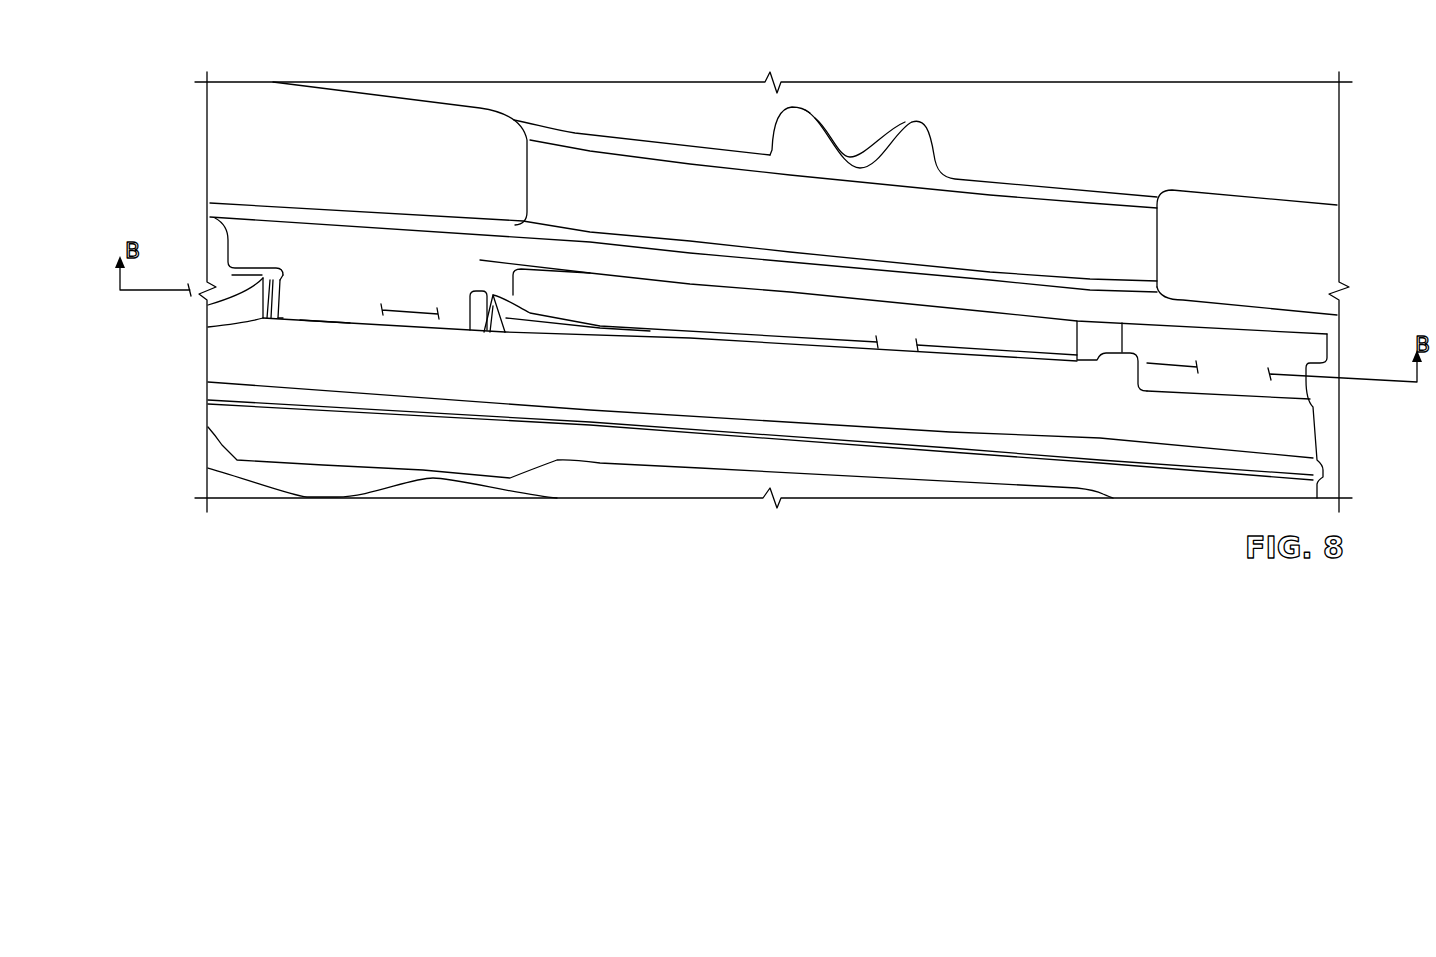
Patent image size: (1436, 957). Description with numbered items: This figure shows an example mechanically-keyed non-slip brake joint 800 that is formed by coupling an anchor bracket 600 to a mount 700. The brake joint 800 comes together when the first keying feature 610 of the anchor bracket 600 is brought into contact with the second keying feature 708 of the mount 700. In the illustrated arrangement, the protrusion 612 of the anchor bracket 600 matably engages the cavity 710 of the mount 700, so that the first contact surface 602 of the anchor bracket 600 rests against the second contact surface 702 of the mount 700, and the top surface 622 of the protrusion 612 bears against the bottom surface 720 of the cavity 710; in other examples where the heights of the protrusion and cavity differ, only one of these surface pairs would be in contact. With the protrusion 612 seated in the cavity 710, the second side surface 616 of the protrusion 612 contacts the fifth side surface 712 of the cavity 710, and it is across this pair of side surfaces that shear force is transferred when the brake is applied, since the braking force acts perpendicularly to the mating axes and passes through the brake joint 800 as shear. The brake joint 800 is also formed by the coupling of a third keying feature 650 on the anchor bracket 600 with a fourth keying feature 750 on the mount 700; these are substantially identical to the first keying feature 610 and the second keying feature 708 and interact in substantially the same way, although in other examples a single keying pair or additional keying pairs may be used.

The mechanically-keyed non-slip brake joint 800 is at (1214, 136).
The anchor bracket 600 is at (1010, 182).
The first contact surface 602 is at (228, 268).
The protrusion 612 is at (412, 303).
The second side surface 616 is at (470, 303).
The top surface 622 is at (283, 316).
The bottom surface 720 is at (302, 320).
The second contact surface 702 is at (210, 325).
The cavity 710 is at (327, 332).
The first keying feature 610 is at (384, 342).
The second keying feature 708 is at (355, 314).
The fifth side surface 712 is at (494, 334).
The mount 700 is at (893, 352).
The third keying feature 650 is at (1188, 403).
The fourth keying feature 750 is at (1237, 378).